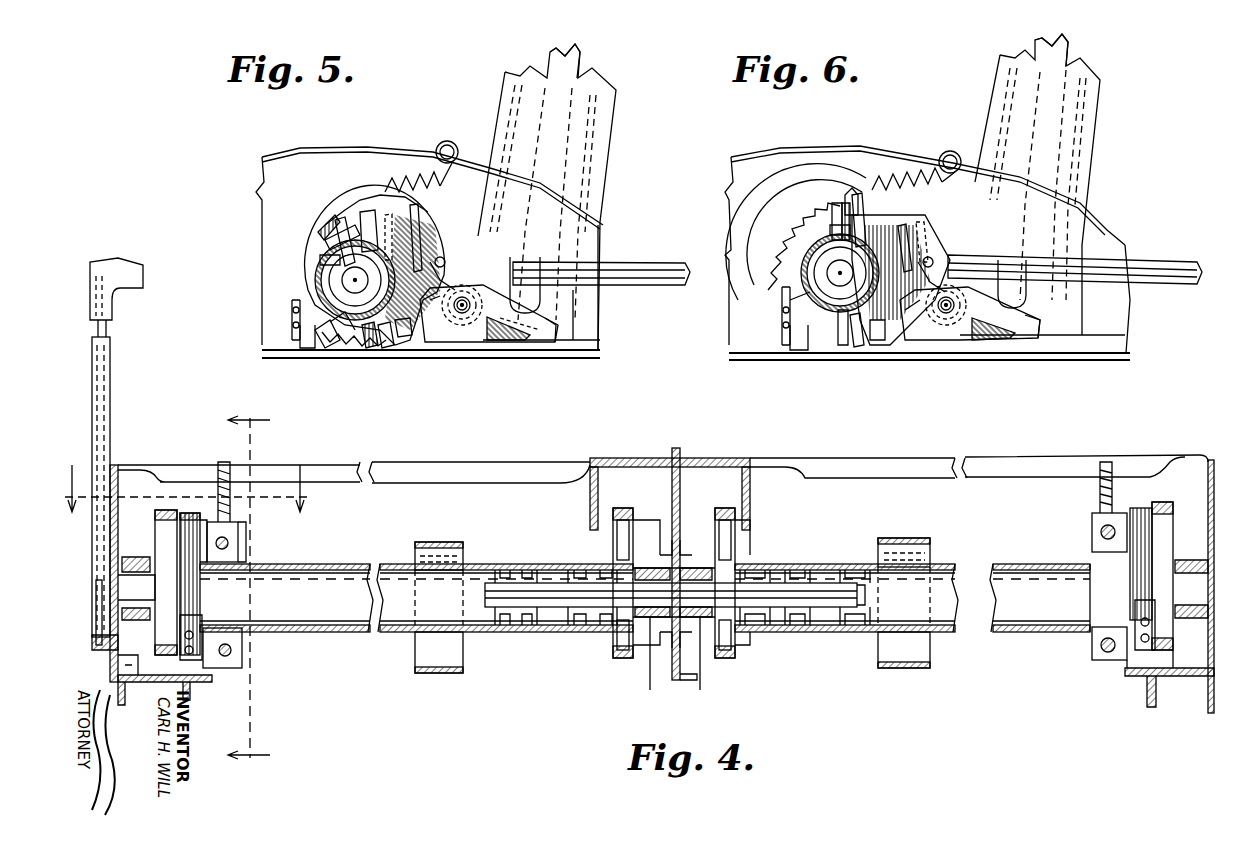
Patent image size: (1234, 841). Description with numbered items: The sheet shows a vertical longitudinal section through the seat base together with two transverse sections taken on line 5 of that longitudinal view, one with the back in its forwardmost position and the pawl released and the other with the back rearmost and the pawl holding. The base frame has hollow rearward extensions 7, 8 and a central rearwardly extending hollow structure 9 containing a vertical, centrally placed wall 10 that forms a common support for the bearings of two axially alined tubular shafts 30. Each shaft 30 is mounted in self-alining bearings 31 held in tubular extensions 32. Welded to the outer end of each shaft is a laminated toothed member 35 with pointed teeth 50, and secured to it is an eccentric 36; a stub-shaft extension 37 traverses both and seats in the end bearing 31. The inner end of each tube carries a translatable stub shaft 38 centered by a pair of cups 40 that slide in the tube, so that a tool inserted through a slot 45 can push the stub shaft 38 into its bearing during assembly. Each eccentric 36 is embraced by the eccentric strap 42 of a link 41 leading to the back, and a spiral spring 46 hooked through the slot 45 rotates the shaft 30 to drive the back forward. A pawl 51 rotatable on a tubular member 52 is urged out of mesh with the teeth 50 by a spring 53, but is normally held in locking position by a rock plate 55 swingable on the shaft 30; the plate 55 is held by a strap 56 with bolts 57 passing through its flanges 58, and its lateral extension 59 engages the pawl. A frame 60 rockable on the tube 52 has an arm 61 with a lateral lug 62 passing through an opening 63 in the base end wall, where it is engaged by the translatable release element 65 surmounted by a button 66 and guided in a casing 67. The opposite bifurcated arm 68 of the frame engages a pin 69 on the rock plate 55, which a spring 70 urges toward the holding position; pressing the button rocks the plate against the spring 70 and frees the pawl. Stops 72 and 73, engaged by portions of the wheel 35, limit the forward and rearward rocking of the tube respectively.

In FIG. 4, the section line 5— 5 is at (249, 578).
In FIG. 4, the rearward extension 7 is at (110, 480).
In FIG. 4, the rearward extension 8 is at (1210, 502).
In FIG. 4, the central rearwardly extending hollow structure 9 is at (770, 470).
In FIG. 4, the centrally placed wall 10 is at (682, 500).
In FIG. 5, the shaft 30 is at (342, 280).
In FIG. 6, the shaft 30 is at (838, 278).
In FIG. 4, the shaft 30 is at (315, 615).
In FIG. 4, the self-alining bearing 31 is at (118, 655).
In FIG. 4, the tubular extension 32 is at (652, 566).
In FIG. 5, the toothed member 35 is at (376, 215).
In FIG. 6, the toothed member 35 is at (835, 220).
In FIG. 4, the toothed member 35 is at (232, 530).
In FIG. 5, the eccentric 36 is at (355, 293).
In FIG. 6, the eccentric 36 is at (745, 262).
In FIG. 4, the eccentric 36 is at (185, 512).
In FIG. 5, the stub-shaft extension 37 is at (335, 245).
In FIG. 6, the stub-shaft extension 37 is at (805, 290).
In FIG. 4, the stub-shaft extension 37 is at (125, 585).
In FIG. 4, the translatable stub shaft 38 is at (565, 604).
In FIG. 4, the cup 40 is at (505, 618).
In FIG. 5, the link 41 is at (600, 268).
In FIG. 6, the link 41 is at (1140, 268).
In FIG. 5, the eccentric strap 42 is at (325, 258).
In FIG. 6, the eccentric strap 42 is at (835, 230).
In FIG. 4, the eccentric strap 42 is at (622, 510).
In FIG. 4, the slot 45 is at (463, 568).
In FIG. 4, the spring 46 is at (445, 658).
In FIG. 5, the pointed teeth 50 is at (345, 330).
In FIG. 6, the pointed teeth 50 is at (792, 205).
In FIG. 5, the pawl 51 is at (442, 270).
In FIG. 6, the pawl 51 is at (945, 270).
In FIG. 5, the tubular member 52 is at (462, 313).
In FIG. 6, the tubular member 52 is at (938, 320).
In FIG. 5, the spring 53 is at (444, 260).
In FIG. 6, the spring 53 is at (930, 256).
In FIG. 5, the rock plate 55 is at (389, 215).
In FIG. 6, the rock plate 55 is at (924, 230).
In FIG. 4, the rock plate 55 is at (204, 525).
In FIG. 5, the strap 56 is at (322, 240).
In FIG. 6, the strap 56 is at (855, 190).
In FIG. 5, the bolt 57 is at (343, 225).
In FIG. 6, the bolt 57 is at (842, 210).
In FIG. 5, the flange 58 is at (382, 340).
In FIG. 6, the flange 58 is at (860, 200).
In FIG. 4, the flange 58 is at (240, 530).
In FIG. 5, the lateral extension 59 is at (416, 208).
In FIG. 6, the lateral extension 59 is at (905, 230).
In FIG. 4, the lateral extension 59 is at (200, 520).
In FIG. 5, the frame 60 is at (472, 330).
In FIG. 6, the frame 60 is at (965, 330).
In FIG. 5, the arm 61 is at (520, 330).
In FIG. 6, the arm 61 is at (995, 330).
In FIG. 5, the lateral lug 62 is at (552, 342).
In FIG. 6, the lateral lug 62 is at (1030, 325).
In FIG. 4, the lateral lug 62 is at (96, 638).
In FIG. 5, the opening 63 is at (563, 310).
In FIG. 6, the opening 63 is at (1050, 320).
In FIG. 5, the translatable release element 65 is at (576, 72).
In FIG. 6, the translatable release element 65 is at (1062, 62).
In FIG. 4, the translatable release element 65 is at (98, 610).
In FIG. 4, the button 66 is at (112, 274).
In FIG. 5, the casing 67 is at (598, 150).
In FIG. 6, the casing 67 is at (1085, 140).
In FIG. 4, the casing 67 is at (96, 395).
In FIG. 5, the bifurcated arm 68 is at (405, 335).
In FIG. 6, the bifurcated arm 68 is at (880, 335).
In FIG. 5, the pin 69 is at (435, 305).
In FIG. 6, the pin 69 is at (910, 312).
In FIG. 5, the spring 70 is at (446, 142).
In FIG. 6, the spring 70 is at (893, 185).
In FIG. 4, the spring 70 is at (243, 528).
In FIG. 5, the stop 72 is at (306, 345).
In FIG. 6, the stop 72 is at (798, 340).
In FIG. 5, the stop 73 is at (292, 330).
In FIG. 6, the stop 73 is at (782, 300).
In FIG. 4, the stop 73 is at (192, 660).